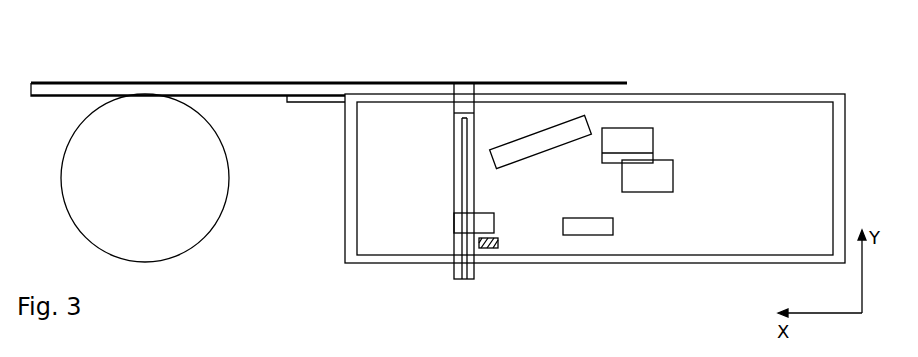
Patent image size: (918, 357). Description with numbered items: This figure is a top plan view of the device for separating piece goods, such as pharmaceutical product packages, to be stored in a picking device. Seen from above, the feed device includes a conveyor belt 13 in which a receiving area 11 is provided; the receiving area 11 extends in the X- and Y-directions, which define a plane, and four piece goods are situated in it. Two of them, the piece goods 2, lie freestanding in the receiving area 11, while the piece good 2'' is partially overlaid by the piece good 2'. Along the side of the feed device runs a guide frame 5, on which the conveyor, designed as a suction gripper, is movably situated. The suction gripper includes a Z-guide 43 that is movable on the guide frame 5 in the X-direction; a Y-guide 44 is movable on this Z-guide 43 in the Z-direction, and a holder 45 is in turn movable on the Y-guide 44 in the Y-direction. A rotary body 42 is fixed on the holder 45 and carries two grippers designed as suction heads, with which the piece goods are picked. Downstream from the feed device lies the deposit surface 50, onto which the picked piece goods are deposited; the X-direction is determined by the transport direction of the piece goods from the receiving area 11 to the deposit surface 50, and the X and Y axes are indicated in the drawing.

The piece good 2 is at (560, 170).
The piece good 2' is at (671, 91).
The piece good 2'' is at (678, 240).
The guide frame 5 is at (305, 83).
The receiving area 11 is at (413, 186).
The conveyor belt 13 is at (810, 143).
The rotary body 42 is at (494, 248).
The Z-guide 43 is at (464, 83).
The Y-guide 44 is at (467, 168).
The holder 45 is at (472, 224).
The deposit surface 50 is at (143, 182).